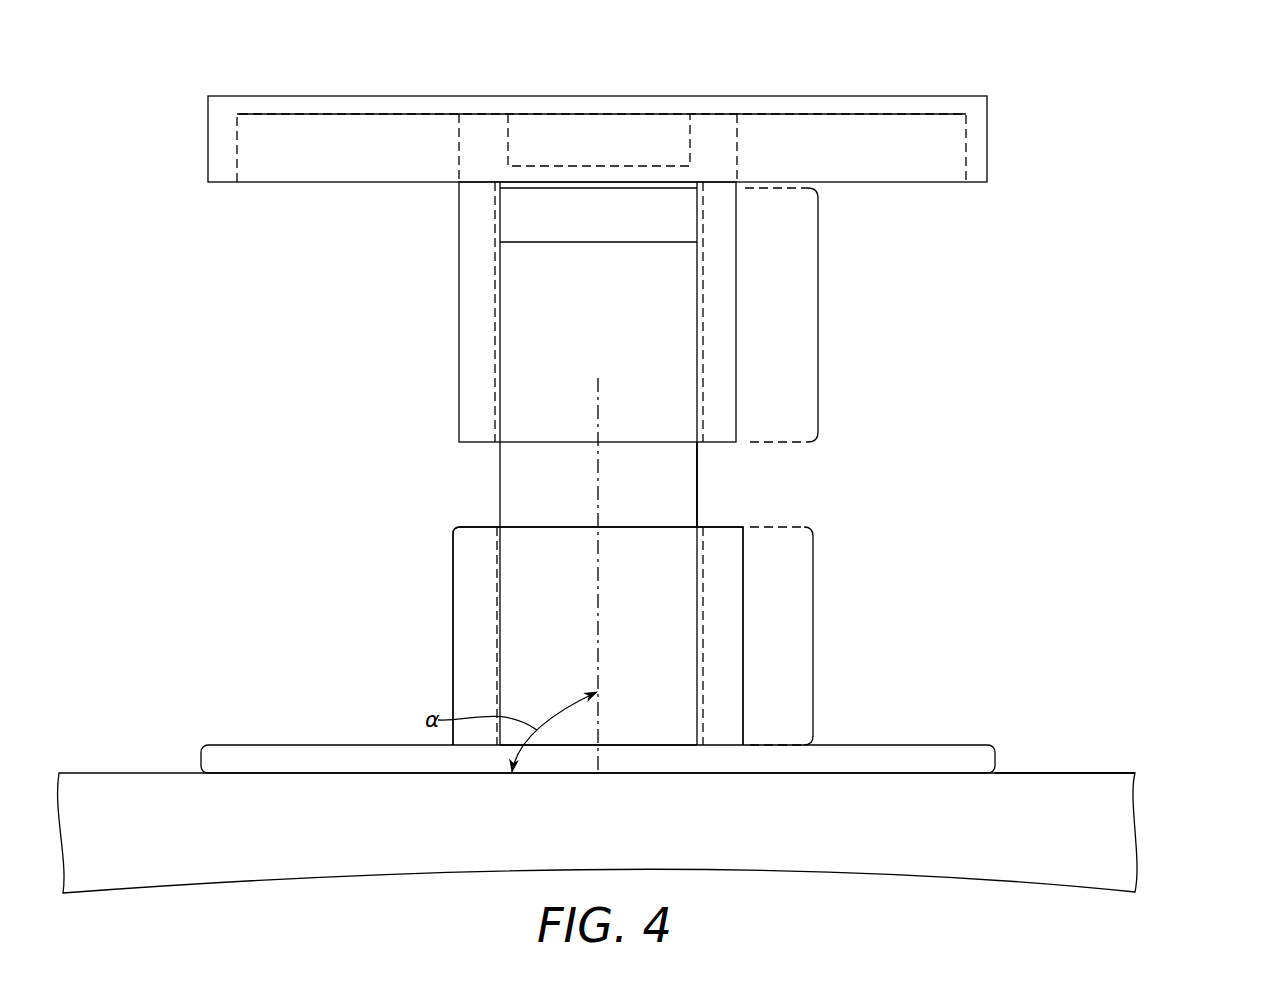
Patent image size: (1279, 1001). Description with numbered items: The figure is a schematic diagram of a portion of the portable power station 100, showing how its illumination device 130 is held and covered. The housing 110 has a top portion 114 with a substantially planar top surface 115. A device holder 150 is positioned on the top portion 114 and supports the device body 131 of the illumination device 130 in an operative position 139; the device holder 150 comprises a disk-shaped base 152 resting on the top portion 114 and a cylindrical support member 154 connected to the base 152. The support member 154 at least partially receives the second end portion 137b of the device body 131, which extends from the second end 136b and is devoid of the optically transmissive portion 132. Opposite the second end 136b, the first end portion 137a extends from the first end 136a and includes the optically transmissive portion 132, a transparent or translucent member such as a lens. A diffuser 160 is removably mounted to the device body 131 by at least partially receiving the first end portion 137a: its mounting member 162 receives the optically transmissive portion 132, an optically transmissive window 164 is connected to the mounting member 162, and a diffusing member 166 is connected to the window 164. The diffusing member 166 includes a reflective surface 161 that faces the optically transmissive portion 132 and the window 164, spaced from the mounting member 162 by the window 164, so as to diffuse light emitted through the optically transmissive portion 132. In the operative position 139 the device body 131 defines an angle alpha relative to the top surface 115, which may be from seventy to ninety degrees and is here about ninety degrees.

The portable power station 100 is at (1152, 55).
The housing 110 is at (1140, 810).
The top portion 114 is at (1093, 771).
The top surface 115 is at (1042, 773).
The illumination device 130 is at (645, 495).
The device body 131 is at (697, 480).
The optically transmissive portion 132 is at (609, 230).
The first end 136a is at (630, 185).
The second end 136b is at (637, 752).
The first end portion 137a is at (818, 296).
The second end portion 137b is at (813, 616).
The operative position 139 is at (776, 484).
The device holder 150 is at (420, 522).
The base 152 is at (215, 760).
The support member 154 is at (462, 650).
The diffuser 160 is at (1008, 99).
The reflective surface 161 is at (300, 118).
The mounting member 162 is at (471, 310).
The optically transmissive window 164 is at (459, 148).
The diffusing member 166 is at (975, 137).